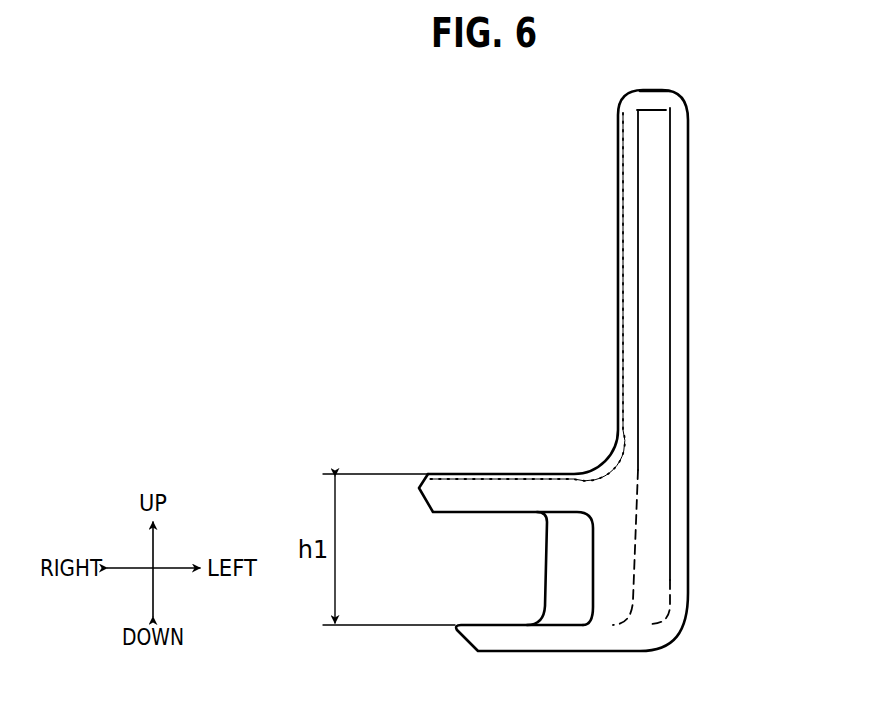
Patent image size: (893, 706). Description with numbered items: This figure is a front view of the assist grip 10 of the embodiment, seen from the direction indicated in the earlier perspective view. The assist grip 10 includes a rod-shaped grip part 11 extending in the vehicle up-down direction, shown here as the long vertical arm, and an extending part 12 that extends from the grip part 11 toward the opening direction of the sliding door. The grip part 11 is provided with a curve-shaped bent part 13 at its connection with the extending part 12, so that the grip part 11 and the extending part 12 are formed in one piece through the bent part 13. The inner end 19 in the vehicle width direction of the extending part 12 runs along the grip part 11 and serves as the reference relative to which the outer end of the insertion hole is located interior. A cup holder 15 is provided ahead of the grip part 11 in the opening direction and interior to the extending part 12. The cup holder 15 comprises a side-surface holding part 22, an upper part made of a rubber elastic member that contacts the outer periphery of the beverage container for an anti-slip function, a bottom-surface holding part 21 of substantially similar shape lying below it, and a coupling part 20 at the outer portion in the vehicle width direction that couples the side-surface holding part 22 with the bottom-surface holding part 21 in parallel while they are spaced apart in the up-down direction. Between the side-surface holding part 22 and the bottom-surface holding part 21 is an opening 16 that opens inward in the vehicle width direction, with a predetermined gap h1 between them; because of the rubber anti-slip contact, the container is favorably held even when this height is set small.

The assist grip 10 is at (710, 121).
The grip part 11 is at (658, 298).
The extending part 12 is at (670, 95).
The bent part 13 is at (654, 104).
The cup holder 15 is at (518, 461).
The opening 16 is at (464, 568).
The inner end 19 is at (617, 137).
The coupling part 20 is at (680, 548).
The bottom-surface holding part 21 is at (513, 644).
The side-surface holding part 22 is at (455, 498).